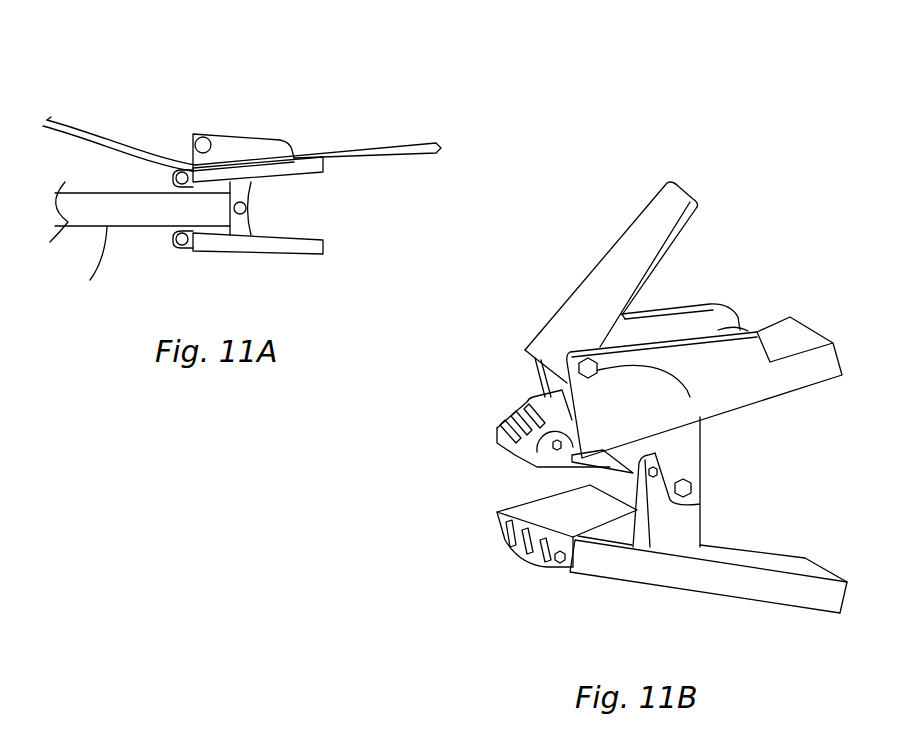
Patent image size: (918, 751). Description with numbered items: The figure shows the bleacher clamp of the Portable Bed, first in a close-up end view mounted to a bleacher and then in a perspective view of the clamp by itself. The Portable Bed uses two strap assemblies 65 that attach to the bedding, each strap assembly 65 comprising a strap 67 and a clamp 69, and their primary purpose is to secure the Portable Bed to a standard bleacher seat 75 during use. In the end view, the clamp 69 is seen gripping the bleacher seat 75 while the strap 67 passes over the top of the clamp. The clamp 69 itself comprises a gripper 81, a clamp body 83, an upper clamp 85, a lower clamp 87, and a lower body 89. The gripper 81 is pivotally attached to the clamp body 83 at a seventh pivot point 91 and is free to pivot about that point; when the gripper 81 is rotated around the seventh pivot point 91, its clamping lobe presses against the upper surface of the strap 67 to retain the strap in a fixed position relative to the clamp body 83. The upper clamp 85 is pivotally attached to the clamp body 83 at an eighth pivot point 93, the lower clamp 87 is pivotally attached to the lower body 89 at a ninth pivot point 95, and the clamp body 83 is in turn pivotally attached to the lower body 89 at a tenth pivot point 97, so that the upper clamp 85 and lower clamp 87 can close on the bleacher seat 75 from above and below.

In FIG. 11A, the strap assembly 65 is at (158, 97).
In FIG. 11A, the strap 67 is at (380, 147).
In FIG. 11A, the clamp 69 is at (284, 92).
In FIG. 11B, the clamp 69 is at (418, 464).
In FIG. 11A, the bleacher seat 75 is at (107, 226).
In FIG. 11B, the gripper 81 is at (610, 243).
In FIG. 11B, the clamp body 83 is at (682, 308).
In FIG. 11B, the upper clamp 85 is at (517, 457).
In FIG. 11B, the lower clamp 87 is at (502, 547).
In FIG. 11B, the lower body 89 is at (673, 585).
In FIG. 11B, the seventh pivot point 91 is at (690, 397).
In FIG. 11B, the eighth pivot point 93 is at (556, 436).
In FIG. 11B, the ninth pivot point 95 is at (557, 565).
In FIG. 11B, the tenth pivot point 97 is at (697, 482).